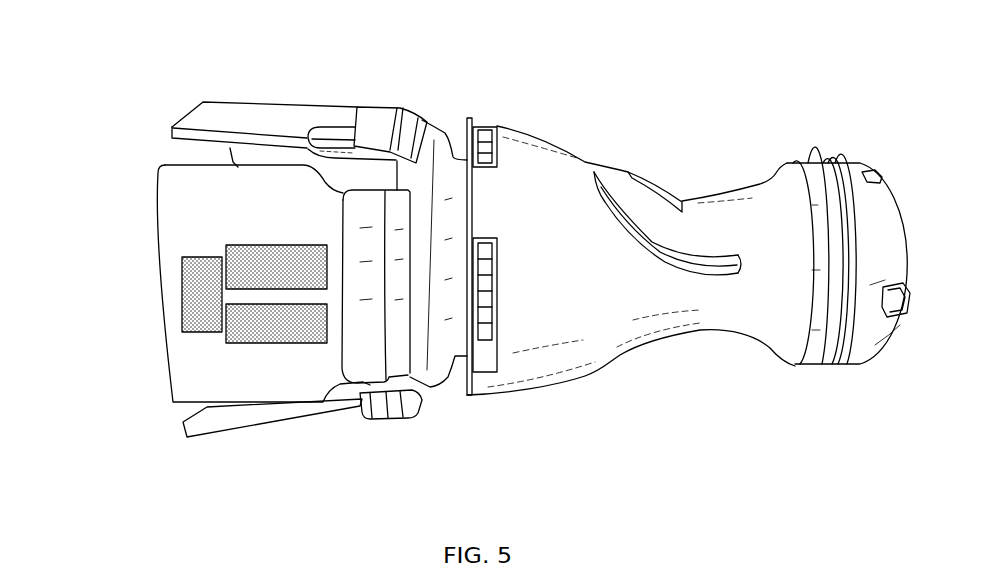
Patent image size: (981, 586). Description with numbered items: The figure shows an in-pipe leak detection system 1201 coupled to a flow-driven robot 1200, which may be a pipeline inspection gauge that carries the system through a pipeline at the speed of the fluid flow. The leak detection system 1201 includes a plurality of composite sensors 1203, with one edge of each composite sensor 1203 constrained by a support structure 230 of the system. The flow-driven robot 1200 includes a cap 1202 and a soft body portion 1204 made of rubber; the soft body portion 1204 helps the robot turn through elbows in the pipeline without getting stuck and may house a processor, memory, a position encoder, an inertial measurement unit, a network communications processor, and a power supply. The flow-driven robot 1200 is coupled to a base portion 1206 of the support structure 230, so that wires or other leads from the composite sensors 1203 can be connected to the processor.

The flow-driven robot 1200 is at (470, 402).
The in-pipe leak detection system 1201 is at (432, 57).
The cap 1202 is at (862, 164).
The composite sensor 1203 is at (138, 218).
The soft body portion 1204 is at (634, 172).
The base portion 1206 is at (447, 126).
The support structure 230 is at (423, 443).